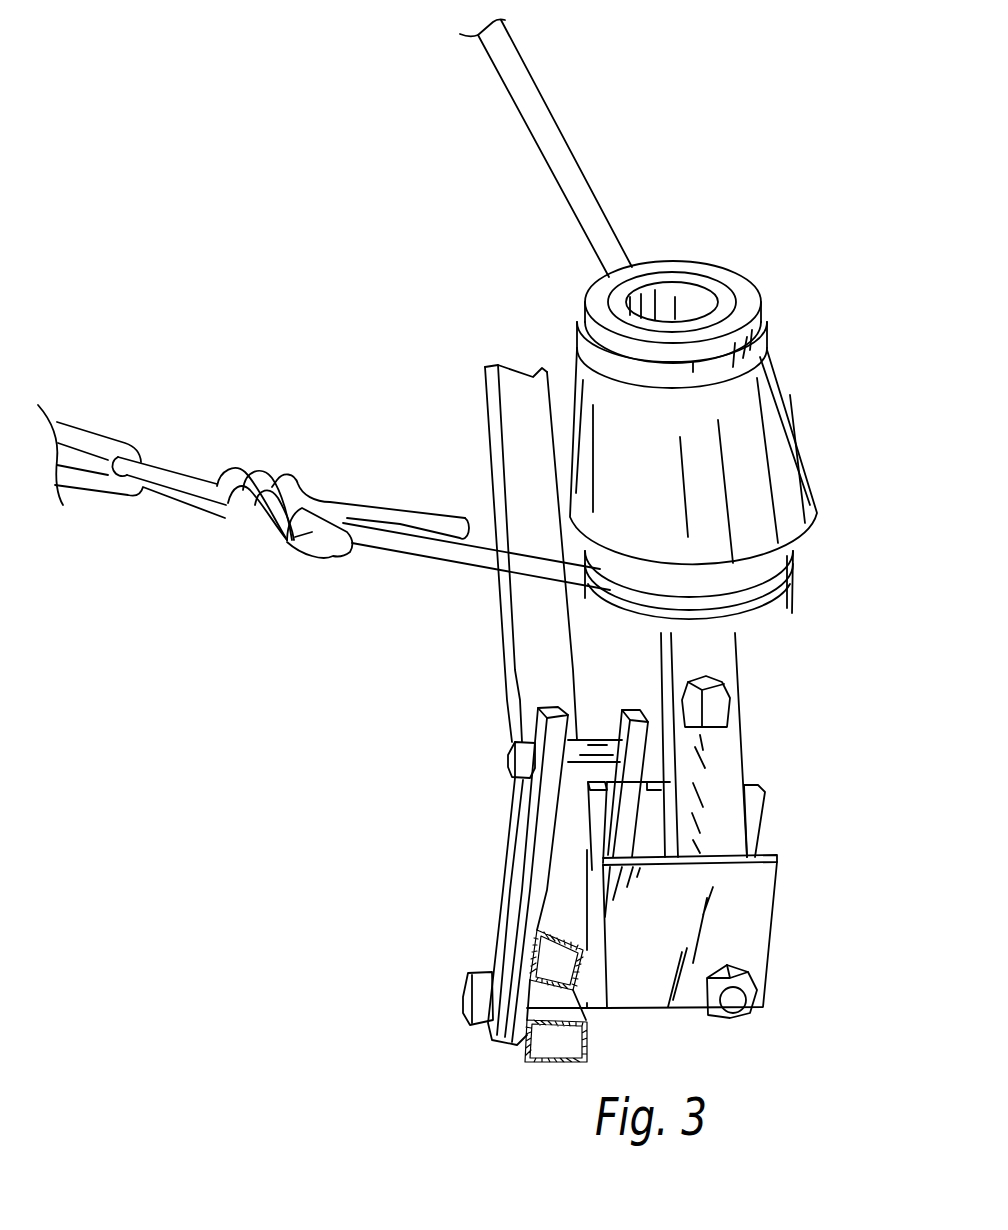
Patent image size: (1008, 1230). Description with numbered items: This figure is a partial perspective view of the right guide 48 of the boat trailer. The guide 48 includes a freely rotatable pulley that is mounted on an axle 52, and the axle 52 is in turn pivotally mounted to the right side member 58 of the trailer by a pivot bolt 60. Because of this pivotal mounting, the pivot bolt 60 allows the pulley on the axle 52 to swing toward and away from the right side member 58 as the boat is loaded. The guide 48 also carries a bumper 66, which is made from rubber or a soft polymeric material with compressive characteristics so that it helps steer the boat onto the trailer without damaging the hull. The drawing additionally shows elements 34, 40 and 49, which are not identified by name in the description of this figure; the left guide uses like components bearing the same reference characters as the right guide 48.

The support rod 34 is at (531, 109).
The cable 40 is at (289, 545).
The guide 48 is at (818, 446).
The retaining rings 49 is at (760, 596).
The axle 52 is at (681, 283).
The right side member 58 is at (533, 683).
The pivot bolt 60 is at (740, 1000).
The bumper 66 is at (760, 388).